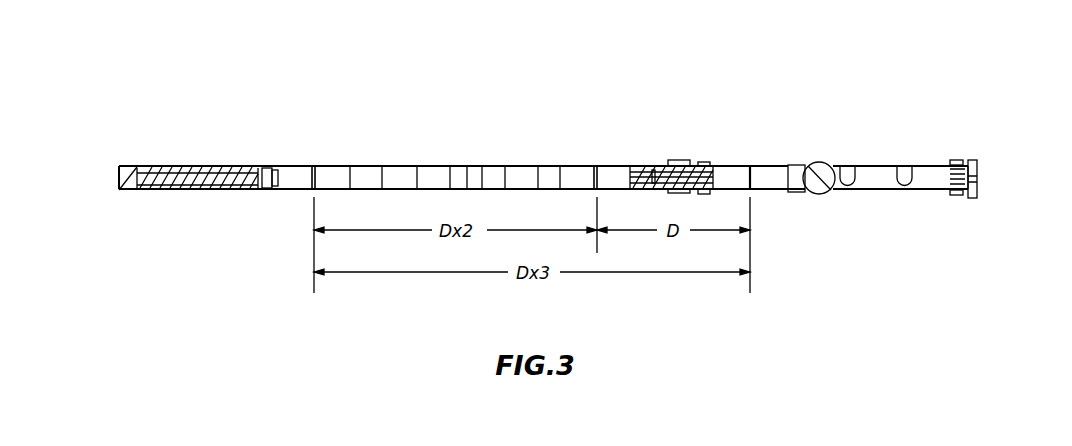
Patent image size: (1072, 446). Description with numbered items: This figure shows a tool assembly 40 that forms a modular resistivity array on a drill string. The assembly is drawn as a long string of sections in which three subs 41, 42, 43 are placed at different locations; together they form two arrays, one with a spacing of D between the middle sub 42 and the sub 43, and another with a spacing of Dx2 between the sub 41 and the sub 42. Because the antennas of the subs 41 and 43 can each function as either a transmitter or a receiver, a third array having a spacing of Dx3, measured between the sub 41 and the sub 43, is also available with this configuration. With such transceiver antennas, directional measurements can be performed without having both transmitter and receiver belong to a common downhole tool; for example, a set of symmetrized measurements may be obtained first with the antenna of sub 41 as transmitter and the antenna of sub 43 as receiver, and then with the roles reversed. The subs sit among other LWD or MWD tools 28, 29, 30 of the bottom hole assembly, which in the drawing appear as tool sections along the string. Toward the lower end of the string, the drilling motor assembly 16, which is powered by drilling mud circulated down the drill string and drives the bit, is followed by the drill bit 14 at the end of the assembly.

The drill bit 14 is at (977, 173).
The drilling motor assembly 16 is at (882, 163).
The LWD or MWD tool 28 is at (197, 165).
The LWD or MWD tool 29 is at (442, 168).
The LWD or MWD tool 30 is at (680, 165).
The tool assembly 40 is at (688, 78).
The sub (transceiver antenna) 41 is at (313, 168).
The sub 42 is at (597, 168).
The sub (transceiver antenna) 43 is at (750, 167).